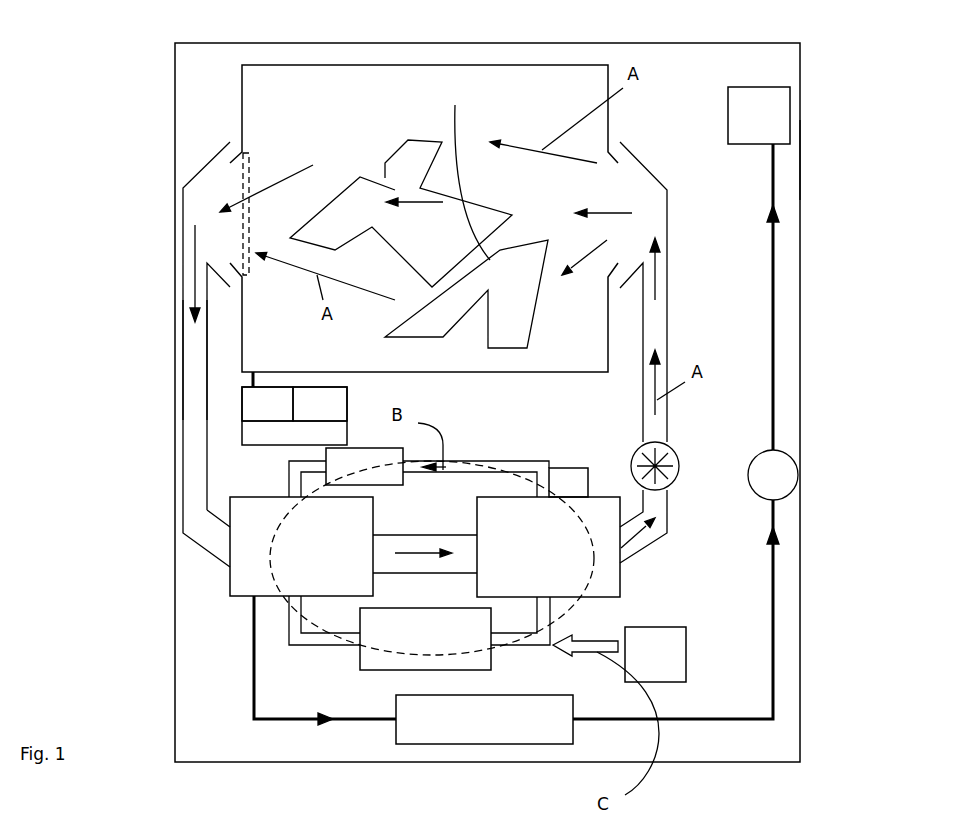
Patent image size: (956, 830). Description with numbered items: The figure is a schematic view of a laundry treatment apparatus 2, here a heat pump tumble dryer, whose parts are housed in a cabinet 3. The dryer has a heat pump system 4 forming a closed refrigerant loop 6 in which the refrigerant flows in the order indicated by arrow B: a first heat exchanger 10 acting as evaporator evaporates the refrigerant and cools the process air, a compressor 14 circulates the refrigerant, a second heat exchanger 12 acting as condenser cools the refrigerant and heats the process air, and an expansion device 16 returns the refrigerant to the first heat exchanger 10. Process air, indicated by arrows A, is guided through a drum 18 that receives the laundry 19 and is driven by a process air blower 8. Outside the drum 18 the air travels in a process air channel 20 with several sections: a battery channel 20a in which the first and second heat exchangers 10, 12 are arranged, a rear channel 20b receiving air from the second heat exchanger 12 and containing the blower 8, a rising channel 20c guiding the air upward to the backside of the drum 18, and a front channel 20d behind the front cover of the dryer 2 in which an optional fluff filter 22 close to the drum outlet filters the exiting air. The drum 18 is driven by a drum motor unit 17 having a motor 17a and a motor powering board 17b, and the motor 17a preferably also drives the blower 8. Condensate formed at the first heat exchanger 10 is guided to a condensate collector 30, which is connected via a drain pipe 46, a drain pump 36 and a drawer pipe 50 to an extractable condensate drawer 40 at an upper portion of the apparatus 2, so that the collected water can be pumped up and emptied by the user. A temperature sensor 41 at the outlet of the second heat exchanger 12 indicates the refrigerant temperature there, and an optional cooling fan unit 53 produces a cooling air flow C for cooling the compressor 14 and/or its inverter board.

The laundry treatment apparatus 2 is at (186, 64).
The cabinet 3 is at (802, 150).
The heat pump system 4 is at (238, 633).
The refrigerant loop 6 is at (534, 462).
The process air blower 8 is at (641, 450).
The first heat exchanger 10 is at (301, 546).
The second heat exchanger 12 is at (548, 547).
The compressor 14 is at (425, 639).
The expansion device 16 is at (364, 466).
The drum motor unit 17 is at (294, 409).
The motor 17a is at (267, 404).
The motor powering board 17b is at (320, 404).
The drum 18 is at (578, 65).
The laundry 19 is at (384, 162).
The process air channel 20 is at (196, 303).
The battery channel 20a is at (435, 533).
The rear channel 20b is at (667, 502).
The rising channel 20c is at (667, 337).
The front channel 20d is at (198, 353).
The fluff filter 22 is at (246, 227).
The condensate collector 30 is at (484, 719).
The drain pump 36 is at (797, 480).
The condensate drawer 40 is at (759, 115).
The temperature sensor 41 is at (568, 482).
The drain pipe 46 is at (700, 722).
The drawer pipe 50 is at (777, 270).
The cooling fan unit 53 is at (655, 654).